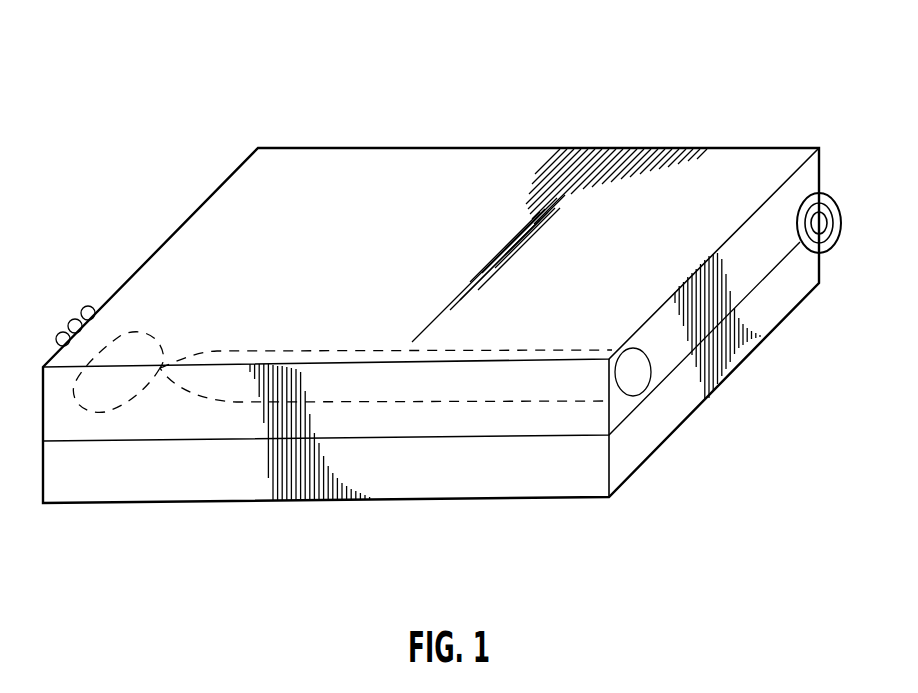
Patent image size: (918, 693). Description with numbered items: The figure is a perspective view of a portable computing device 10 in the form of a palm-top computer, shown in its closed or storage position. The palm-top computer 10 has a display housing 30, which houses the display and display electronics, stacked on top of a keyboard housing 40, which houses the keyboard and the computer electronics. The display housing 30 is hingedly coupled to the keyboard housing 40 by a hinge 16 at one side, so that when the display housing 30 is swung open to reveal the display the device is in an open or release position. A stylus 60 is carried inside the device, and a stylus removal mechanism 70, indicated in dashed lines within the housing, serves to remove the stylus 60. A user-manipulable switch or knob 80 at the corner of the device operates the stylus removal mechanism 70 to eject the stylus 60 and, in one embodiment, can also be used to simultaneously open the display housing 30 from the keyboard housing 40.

The portable computing device 10 is at (658, 124).
The hinge 16 is at (841, 231).
The display housing 30 is at (760, 163).
The keyboard housing 40 is at (773, 316).
The stylus 60 is at (497, 402).
The stylus removal mechanism 70 is at (160, 358).
The user-manipulable switch or knob 80 is at (84, 316).